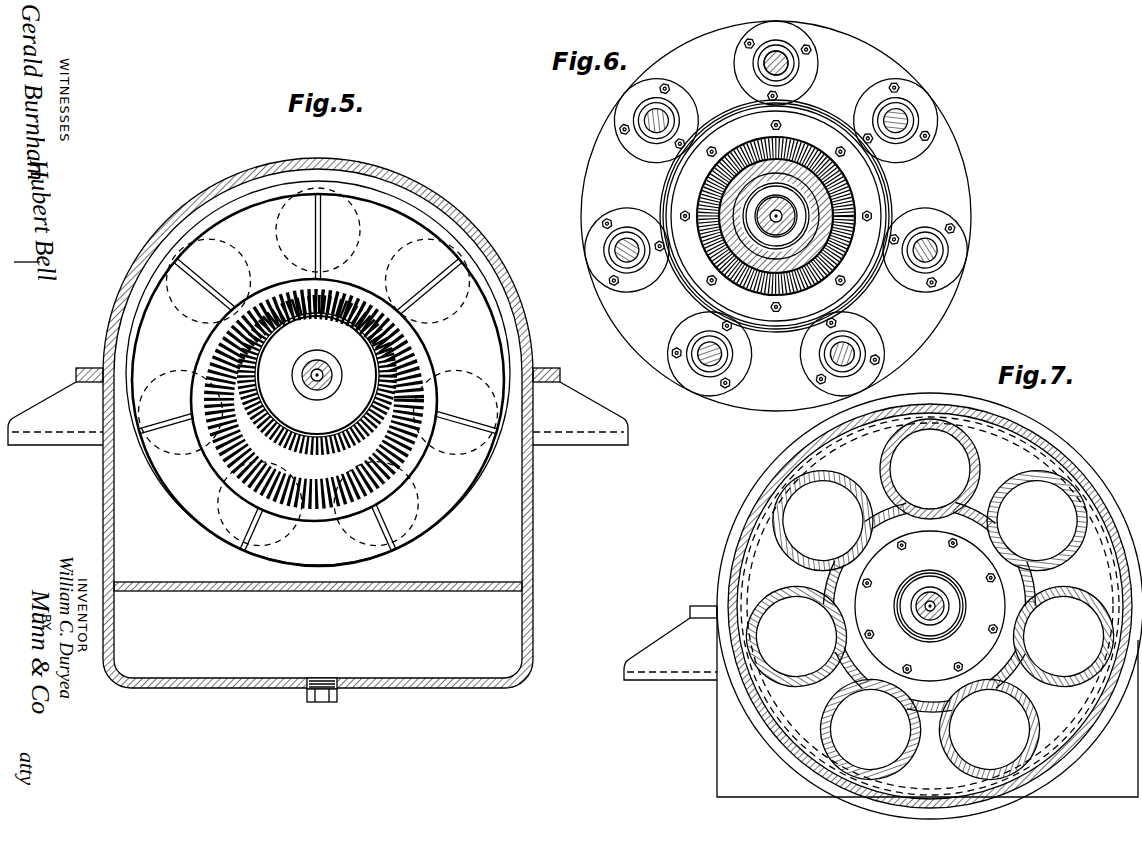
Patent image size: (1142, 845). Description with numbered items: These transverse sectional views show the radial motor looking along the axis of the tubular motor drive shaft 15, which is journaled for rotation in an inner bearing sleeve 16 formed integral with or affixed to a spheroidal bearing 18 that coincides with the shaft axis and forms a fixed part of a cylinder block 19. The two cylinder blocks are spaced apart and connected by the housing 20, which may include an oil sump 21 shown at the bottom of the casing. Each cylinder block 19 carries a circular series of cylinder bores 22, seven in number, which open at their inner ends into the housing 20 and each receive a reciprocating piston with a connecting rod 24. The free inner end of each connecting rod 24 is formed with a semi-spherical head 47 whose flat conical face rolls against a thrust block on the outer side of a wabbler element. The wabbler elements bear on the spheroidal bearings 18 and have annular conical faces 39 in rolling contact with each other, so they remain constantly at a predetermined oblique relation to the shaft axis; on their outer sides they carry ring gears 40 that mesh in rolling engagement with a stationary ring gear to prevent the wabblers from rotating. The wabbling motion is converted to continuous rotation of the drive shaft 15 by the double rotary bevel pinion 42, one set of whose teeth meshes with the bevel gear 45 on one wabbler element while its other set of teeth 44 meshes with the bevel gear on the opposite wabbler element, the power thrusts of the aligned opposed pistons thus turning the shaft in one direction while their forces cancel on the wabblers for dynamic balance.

In FIG. 5, the motor drive shaft 15 is at (326, 381).
In FIG. 7, the motor drive shaft 15 is at (937, 617).
In FIG. 6, the inner bearing sleeve 16 is at (773, 226).
In FIG. 7, the inner bearing sleeve 16 is at (948, 606).
In FIG. 6, the spheroidal bearing 18 is at (790, 178).
In FIG. 7, the spheroidal bearing 18 is at (950, 582).
In FIG. 7, the cylinder block 19 is at (802, 464).
In FIG. 5, the housing 20 is at (328, 162).
In FIG. 5, the oil sump 21 is at (523, 590).
In FIG. 7, the cylinder bore 22 is at (934, 424).
In FIG. 6, the connecting rod 24 is at (648, 125).
In FIG. 5, the annular conical face 39 is at (320, 521).
In FIG. 6, the ring gear 40 is at (858, 197).
In FIG. 5, the double rotary bevel pinion 42 is at (317, 375).
In FIG. 5, the teeth 44 is at (320, 450).
In FIG. 5, the bevel gear 45 is at (392, 460).
In FIG. 6, the semi-spherical head 47 is at (660, 120).